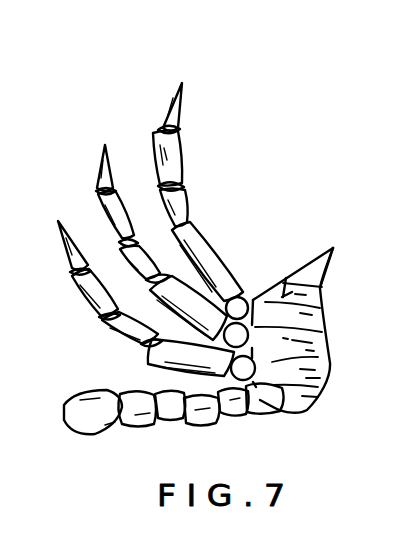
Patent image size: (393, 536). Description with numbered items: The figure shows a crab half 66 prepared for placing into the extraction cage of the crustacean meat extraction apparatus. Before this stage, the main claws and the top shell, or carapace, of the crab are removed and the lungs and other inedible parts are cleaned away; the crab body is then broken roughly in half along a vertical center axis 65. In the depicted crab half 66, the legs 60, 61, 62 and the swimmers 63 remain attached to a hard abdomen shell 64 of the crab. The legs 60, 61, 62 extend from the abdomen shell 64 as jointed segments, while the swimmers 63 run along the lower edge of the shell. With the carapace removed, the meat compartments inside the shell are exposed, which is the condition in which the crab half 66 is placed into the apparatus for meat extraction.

The leg 60 is at (181, 153).
The leg 61 is at (120, 217).
The leg 62 is at (66, 229).
The swimmers 63 is at (83, 392).
The hard abdomen shell 64 is at (282, 296).
The vertical center axis 65 is at (323, 318).
The crab half 66 is at (260, 189).